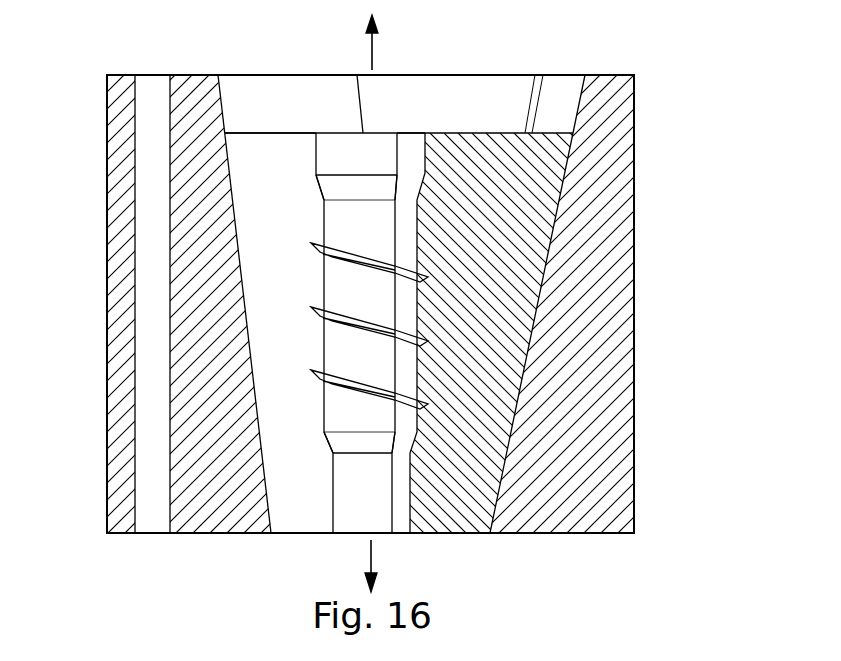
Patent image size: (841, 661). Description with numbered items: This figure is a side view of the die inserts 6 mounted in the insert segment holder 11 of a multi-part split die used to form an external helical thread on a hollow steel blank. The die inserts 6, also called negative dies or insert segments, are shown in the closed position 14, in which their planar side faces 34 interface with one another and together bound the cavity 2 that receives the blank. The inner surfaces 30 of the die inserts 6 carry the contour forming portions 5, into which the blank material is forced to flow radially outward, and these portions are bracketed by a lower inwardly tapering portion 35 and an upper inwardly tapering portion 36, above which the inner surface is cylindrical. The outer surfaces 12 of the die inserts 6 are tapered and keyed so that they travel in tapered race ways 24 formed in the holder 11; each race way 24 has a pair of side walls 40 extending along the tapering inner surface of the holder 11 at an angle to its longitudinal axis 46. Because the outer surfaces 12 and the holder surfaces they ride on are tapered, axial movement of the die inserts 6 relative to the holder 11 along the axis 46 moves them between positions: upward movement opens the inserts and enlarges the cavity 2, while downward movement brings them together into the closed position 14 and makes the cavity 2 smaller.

The cavity 2 is at (352, 523).
The contour forming portions 5 is at (333, 246).
The die inserts 6 is at (247, 133).
The insert segment holder 11 is at (618, 68).
The outer surfaces 12 is at (234, 233).
The closed position 14 is at (675, 170).
The race ways 24 is at (237, 88).
The inner surfaces 30 is at (336, 148).
The planar side faces 34 is at (270, 160).
The lower inwardly tapering portion 35 is at (331, 462).
The upper inwardly tapering portion 36 is at (321, 189).
The side walls 40 is at (360, 78).
The longitudinal axis 46 is at (375, 48).